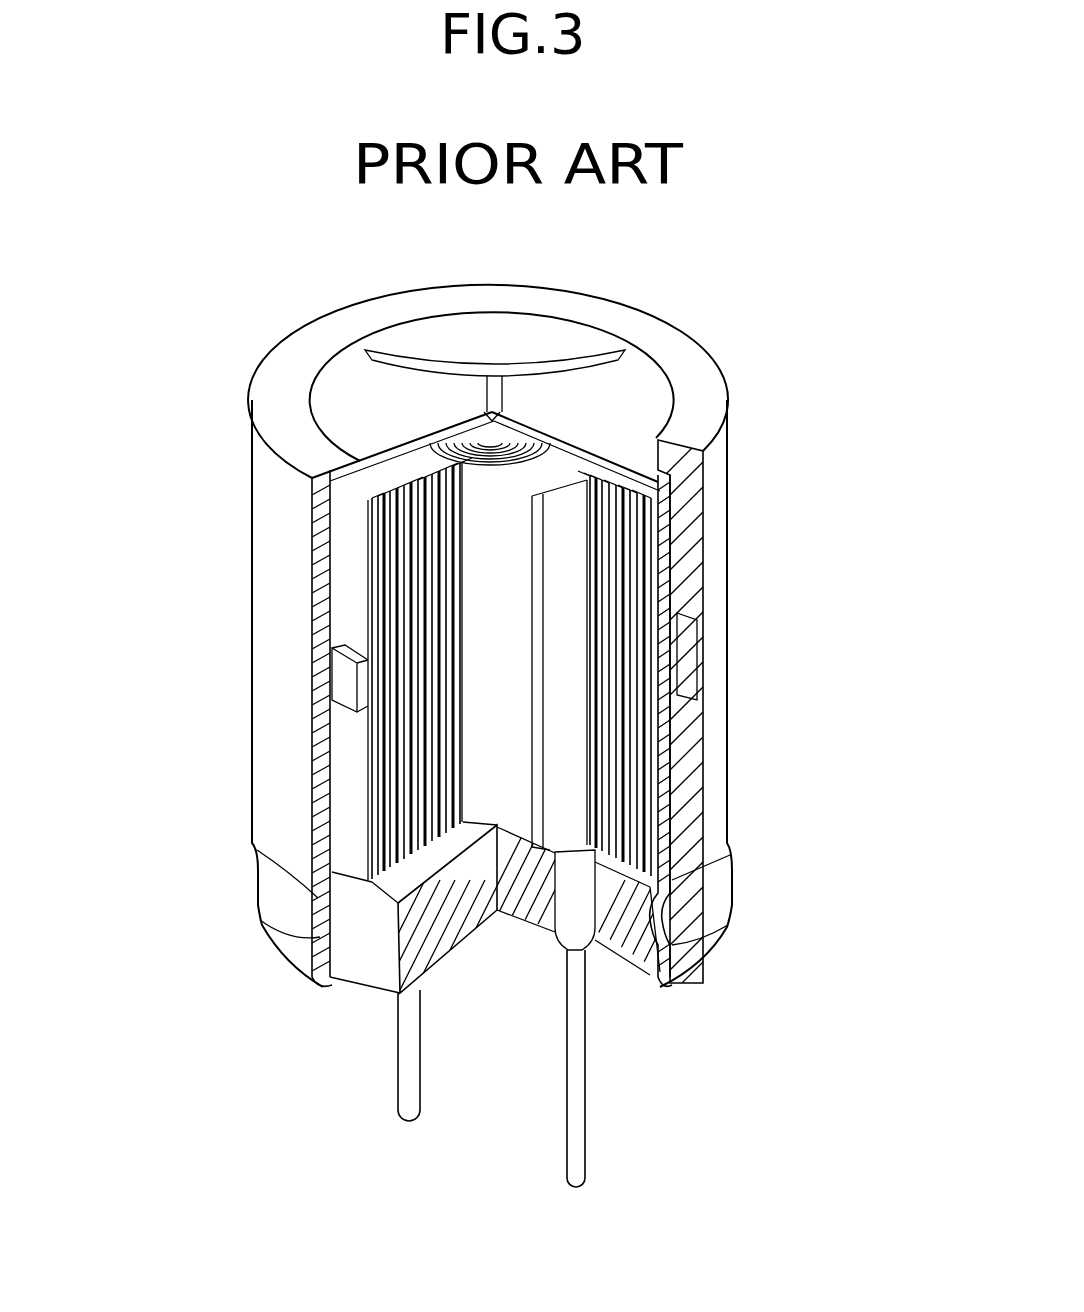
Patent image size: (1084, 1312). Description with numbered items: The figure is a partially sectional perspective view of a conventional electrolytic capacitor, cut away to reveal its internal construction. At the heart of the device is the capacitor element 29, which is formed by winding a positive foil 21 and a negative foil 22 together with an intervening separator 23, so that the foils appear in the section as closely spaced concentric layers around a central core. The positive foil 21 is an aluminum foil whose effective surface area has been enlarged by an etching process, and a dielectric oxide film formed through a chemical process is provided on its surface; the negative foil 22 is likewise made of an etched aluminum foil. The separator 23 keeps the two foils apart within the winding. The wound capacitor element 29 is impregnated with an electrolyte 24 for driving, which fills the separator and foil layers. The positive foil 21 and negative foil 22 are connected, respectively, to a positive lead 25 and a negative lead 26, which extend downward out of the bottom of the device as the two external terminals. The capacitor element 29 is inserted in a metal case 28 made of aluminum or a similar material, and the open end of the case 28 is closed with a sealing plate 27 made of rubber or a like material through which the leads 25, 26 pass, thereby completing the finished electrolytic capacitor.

The positive foil 21 is at (595, 686).
The negative foil 22 is at (563, 542).
The separator 23 is at (600, 792).
The electrolyte 24 is at (590, 608).
The positive lead 25 is at (405, 1088).
The negative lead 26 is at (582, 1105).
The sealing plate 27 is at (432, 897).
The metal case 28 is at (342, 407).
The capacitor element 29 is at (348, 765).